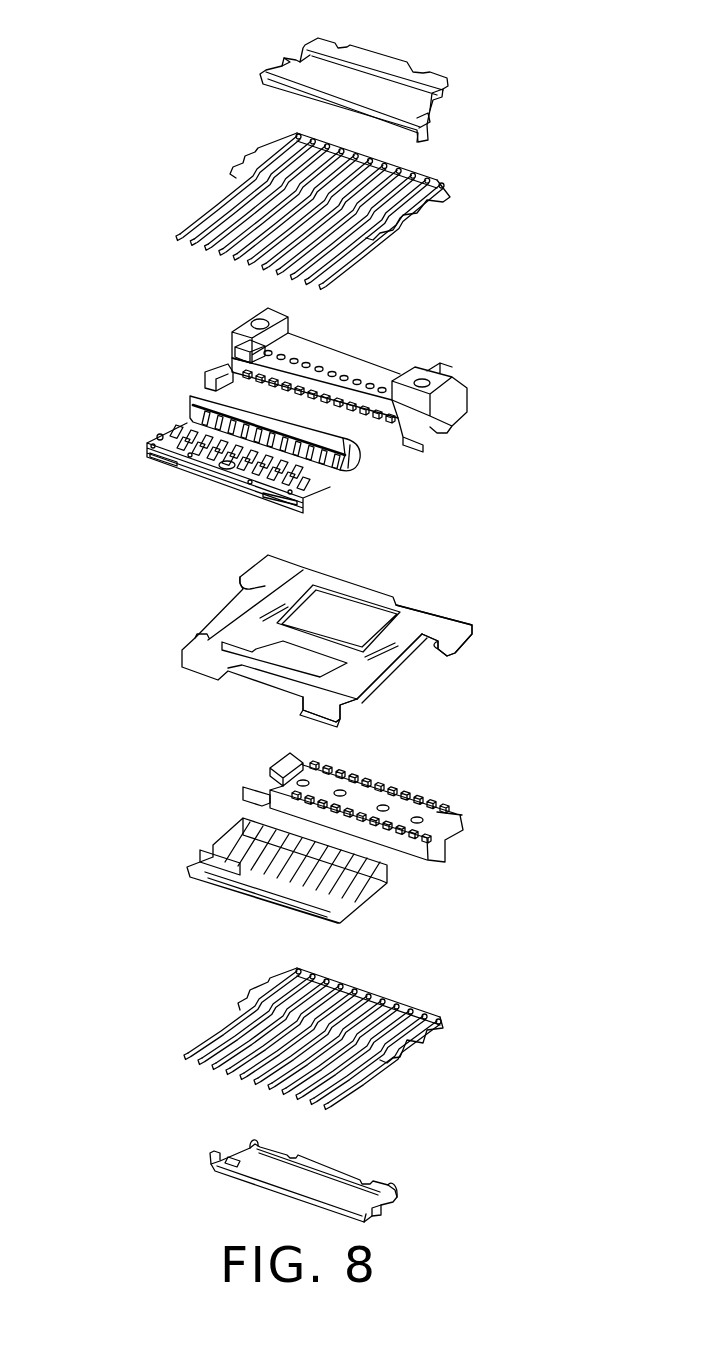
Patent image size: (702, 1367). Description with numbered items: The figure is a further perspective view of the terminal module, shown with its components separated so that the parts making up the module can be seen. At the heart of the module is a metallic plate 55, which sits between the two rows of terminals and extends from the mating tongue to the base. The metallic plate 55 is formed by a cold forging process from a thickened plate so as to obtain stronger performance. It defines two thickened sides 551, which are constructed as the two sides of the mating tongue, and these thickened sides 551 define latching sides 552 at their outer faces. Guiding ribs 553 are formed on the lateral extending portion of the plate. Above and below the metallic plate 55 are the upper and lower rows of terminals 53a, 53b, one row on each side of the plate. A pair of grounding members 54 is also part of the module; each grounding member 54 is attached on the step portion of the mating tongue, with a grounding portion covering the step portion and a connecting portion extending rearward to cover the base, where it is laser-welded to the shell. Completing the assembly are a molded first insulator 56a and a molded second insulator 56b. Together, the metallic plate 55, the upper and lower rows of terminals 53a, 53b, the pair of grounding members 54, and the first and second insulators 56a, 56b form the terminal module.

The grounding member 54 is at (273, 48).
The upper row of terminals 53a is at (222, 175).
The lower row of terminals 53b is at (220, 992).
The first insulator 56a is at (188, 362).
The second insulator 56b is at (213, 808).
The metallic plate 55 is at (404, 618).
The thickened side 551 is at (352, 700).
The latching side 552 is at (378, 680).
The guiding rib 553 is at (445, 632).